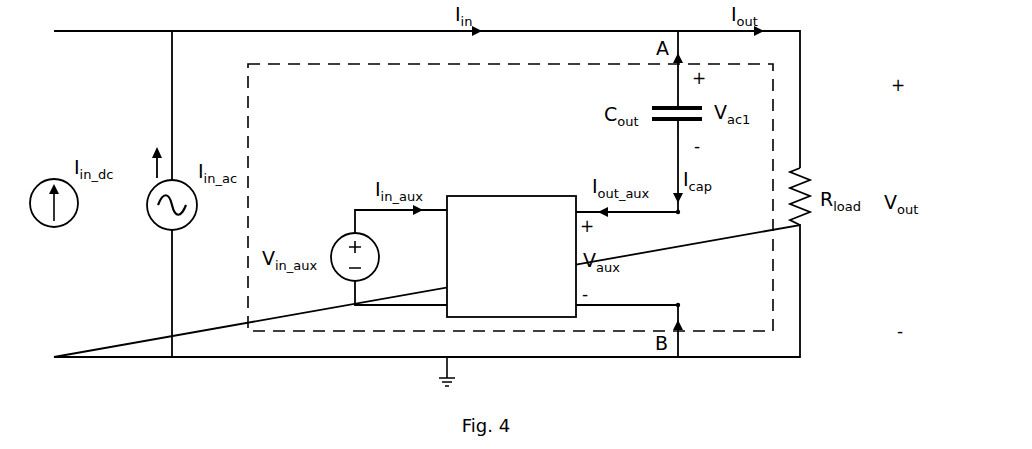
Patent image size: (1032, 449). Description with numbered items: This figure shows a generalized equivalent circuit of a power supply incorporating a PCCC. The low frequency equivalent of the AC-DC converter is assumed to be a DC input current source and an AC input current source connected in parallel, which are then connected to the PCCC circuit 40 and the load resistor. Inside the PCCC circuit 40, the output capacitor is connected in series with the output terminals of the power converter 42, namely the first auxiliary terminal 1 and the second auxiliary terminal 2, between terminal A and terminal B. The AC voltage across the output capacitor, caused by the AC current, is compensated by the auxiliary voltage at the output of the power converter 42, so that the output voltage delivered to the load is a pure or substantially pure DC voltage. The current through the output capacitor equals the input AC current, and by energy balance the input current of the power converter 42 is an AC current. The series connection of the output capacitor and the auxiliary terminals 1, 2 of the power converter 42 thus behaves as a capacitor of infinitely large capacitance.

The PCCC circuit 40 is at (308, 328).
The power converter 42 is at (490, 195).
The auxiliary terminal aux1 1 is at (681, 225).
The auxiliary terminal aux2 2 is at (679, 294).